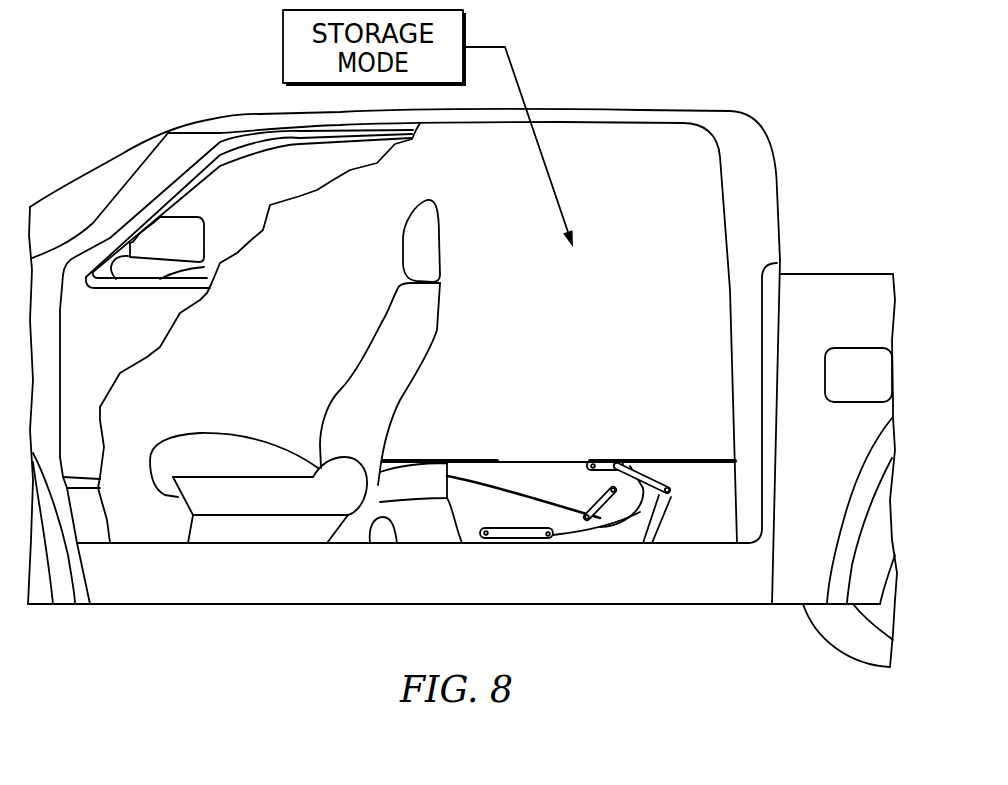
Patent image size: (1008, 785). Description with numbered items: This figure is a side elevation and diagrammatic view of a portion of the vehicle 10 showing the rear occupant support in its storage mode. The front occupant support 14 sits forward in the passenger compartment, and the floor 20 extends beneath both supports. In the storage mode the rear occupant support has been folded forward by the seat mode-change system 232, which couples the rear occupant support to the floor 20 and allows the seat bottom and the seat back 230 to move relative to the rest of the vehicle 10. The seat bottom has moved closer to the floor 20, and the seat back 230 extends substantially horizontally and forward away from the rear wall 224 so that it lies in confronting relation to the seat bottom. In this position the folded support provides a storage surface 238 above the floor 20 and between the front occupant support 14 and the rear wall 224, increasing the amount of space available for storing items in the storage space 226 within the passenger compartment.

The vehicle 10 is at (121, 80).
The front occupant support 14 is at (462, 254).
The floor 20 is at (367, 544).
The door opening rear edge 224 is at (735, 313).
The storage space 226 is at (654, 282).
The seat back 230 is at (532, 445).
The seat mode-change system 232 is at (668, 535).
The storage surface 238 is at (569, 461).